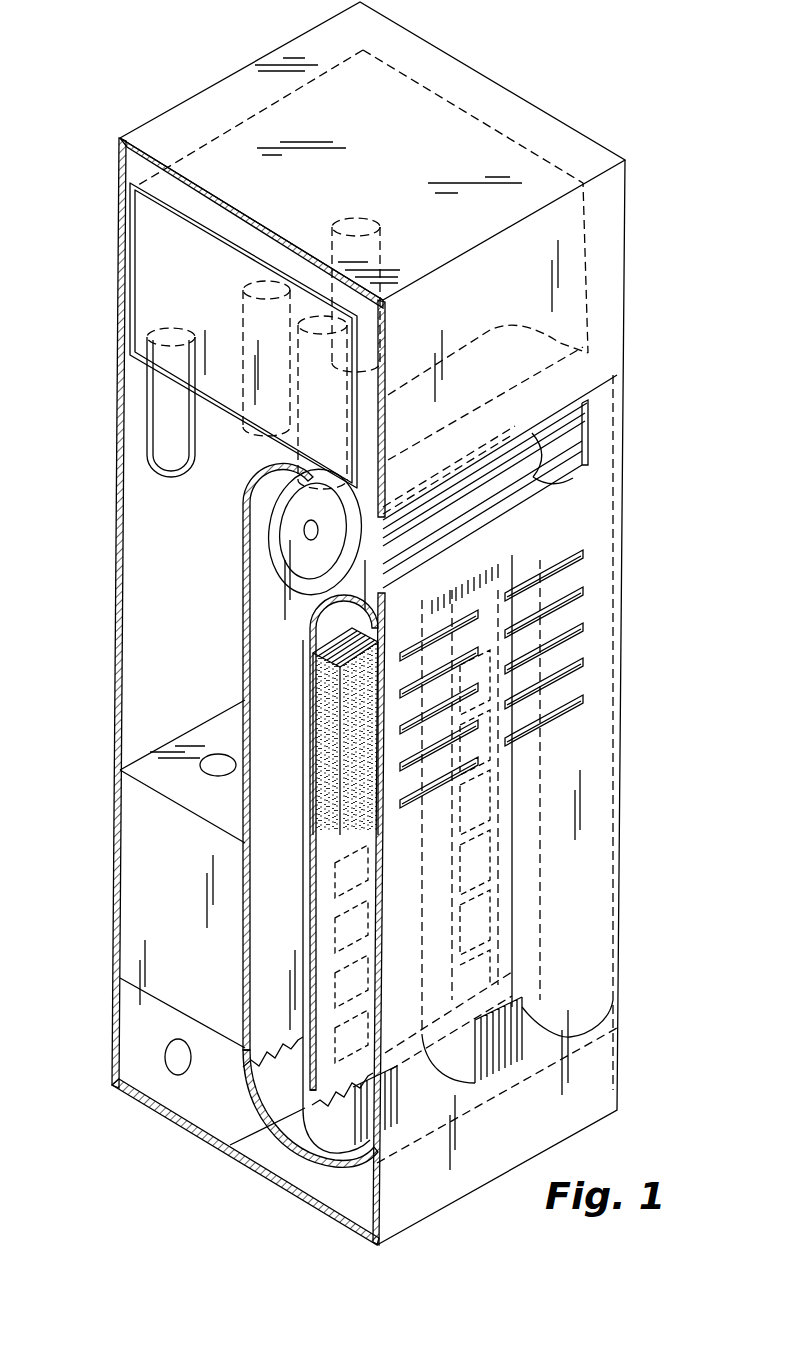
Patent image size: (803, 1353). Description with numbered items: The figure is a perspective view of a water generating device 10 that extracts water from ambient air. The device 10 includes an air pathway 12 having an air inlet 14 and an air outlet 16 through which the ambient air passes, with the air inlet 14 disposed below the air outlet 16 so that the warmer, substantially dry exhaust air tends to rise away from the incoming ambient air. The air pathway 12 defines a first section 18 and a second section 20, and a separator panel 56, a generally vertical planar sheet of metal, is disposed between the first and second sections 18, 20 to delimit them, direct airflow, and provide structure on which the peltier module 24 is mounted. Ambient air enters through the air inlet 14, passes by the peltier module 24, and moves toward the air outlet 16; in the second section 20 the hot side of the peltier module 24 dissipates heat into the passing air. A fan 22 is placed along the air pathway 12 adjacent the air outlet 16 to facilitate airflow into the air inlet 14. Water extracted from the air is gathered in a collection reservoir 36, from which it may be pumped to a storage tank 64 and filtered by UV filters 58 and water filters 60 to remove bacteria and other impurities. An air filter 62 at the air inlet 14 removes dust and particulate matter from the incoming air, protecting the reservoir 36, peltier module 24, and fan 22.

The water generating device 10 is at (622, 104).
The air pathway 12 is at (283, 1010).
The air inlet 14 is at (580, 694).
The air outlet 16 is at (583, 430).
The first section 18 is at (232, 1093).
The second section 20 is at (318, 700).
The fan 22 is at (273, 530).
The peltier module 24 is at (325, 735).
The collection reservoir 36 is at (303, 1145).
The separator panel 56 is at (312, 620).
The UV filter 58 is at (333, 218).
The water filter 60 is at (335, 365).
The air filter 62 is at (155, 407).
The storage tank 64 is at (150, 228).